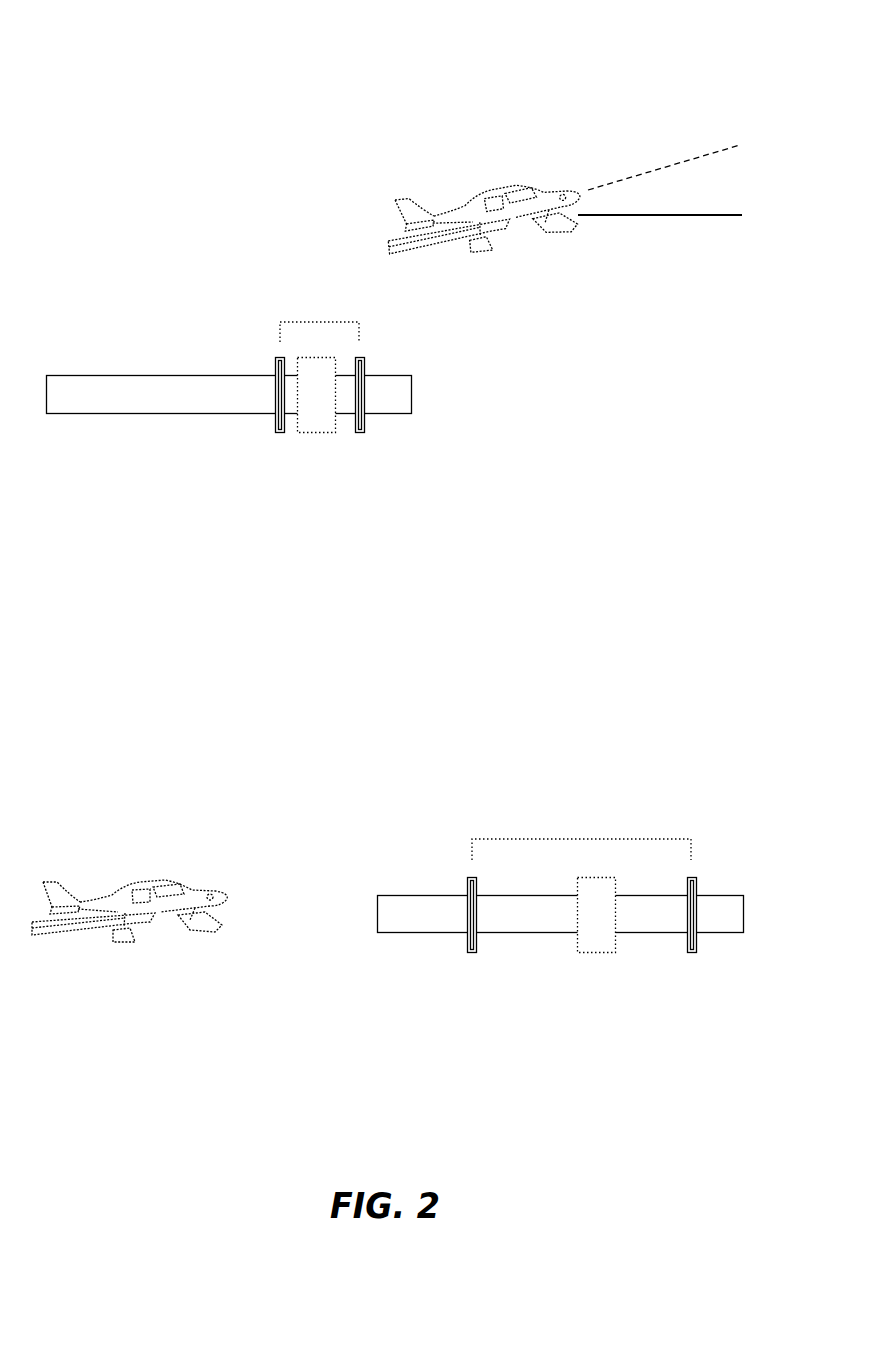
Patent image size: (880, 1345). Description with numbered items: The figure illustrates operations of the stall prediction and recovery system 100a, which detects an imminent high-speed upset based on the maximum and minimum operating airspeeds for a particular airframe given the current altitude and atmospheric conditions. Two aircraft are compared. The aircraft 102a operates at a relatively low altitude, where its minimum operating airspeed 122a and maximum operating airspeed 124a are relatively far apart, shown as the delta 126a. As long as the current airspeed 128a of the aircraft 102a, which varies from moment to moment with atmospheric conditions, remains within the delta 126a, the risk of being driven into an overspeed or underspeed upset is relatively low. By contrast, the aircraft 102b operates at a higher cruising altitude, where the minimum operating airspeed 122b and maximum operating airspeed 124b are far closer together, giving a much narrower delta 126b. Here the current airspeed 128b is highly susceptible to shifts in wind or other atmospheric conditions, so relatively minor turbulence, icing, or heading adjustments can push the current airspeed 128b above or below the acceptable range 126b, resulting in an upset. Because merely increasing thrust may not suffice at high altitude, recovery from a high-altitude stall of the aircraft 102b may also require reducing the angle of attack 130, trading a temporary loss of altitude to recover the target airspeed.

The stall prediction and recovery system 100a is at (80, 62).
The aircraft 102b is at (465, 205).
The angle of attack 130 is at (735, 198).
The delta 126b is at (317, 322).
The minimum operating airspeed 122b is at (280, 433).
The current airspeed 128b is at (316, 433).
The maximum operating airspeed 124b is at (360, 433).
The aircraft 102a is at (150, 882).
The delta 126a is at (583, 839).
The minimum operating airspeed 122a is at (472, 953).
The current airspeed 128a is at (597, 953).
The maximum operating airspeed 124a is at (692, 953).